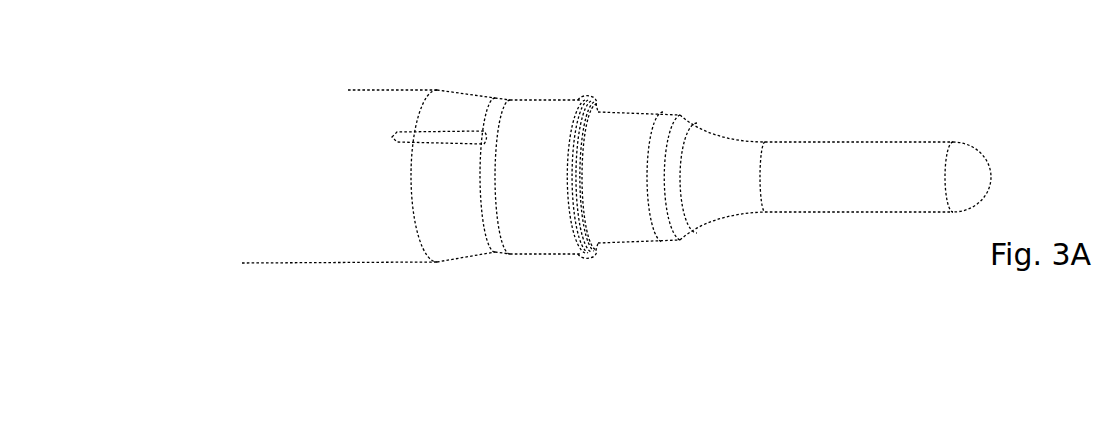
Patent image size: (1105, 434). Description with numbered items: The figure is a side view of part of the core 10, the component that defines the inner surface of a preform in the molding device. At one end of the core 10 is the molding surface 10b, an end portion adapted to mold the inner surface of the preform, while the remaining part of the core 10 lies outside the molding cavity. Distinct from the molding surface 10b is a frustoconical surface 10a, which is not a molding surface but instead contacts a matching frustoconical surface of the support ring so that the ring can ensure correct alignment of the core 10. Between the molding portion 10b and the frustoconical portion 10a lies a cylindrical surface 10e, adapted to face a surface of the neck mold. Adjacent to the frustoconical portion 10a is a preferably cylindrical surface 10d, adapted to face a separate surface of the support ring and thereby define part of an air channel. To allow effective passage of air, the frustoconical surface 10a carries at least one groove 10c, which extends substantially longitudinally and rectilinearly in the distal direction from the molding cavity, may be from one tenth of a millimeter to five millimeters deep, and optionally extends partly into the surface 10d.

The core 10 is at (268, 265).
The frustoconical surface 10a is at (453, 237).
The molding surface 10b is at (628, 230).
The groove 10c is at (459, 136).
The surface 10d is at (320, 230).
The cylindrical surface 10e is at (540, 235).